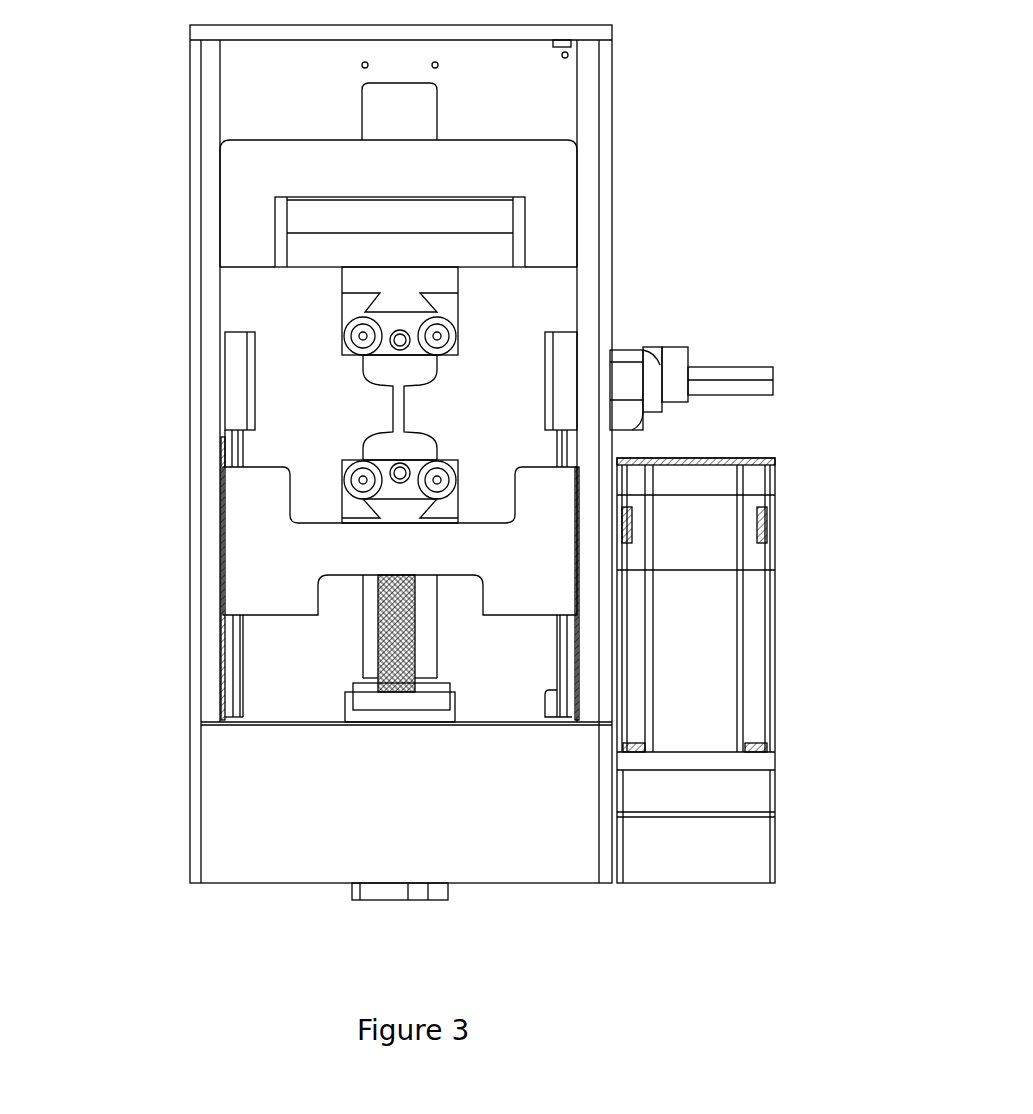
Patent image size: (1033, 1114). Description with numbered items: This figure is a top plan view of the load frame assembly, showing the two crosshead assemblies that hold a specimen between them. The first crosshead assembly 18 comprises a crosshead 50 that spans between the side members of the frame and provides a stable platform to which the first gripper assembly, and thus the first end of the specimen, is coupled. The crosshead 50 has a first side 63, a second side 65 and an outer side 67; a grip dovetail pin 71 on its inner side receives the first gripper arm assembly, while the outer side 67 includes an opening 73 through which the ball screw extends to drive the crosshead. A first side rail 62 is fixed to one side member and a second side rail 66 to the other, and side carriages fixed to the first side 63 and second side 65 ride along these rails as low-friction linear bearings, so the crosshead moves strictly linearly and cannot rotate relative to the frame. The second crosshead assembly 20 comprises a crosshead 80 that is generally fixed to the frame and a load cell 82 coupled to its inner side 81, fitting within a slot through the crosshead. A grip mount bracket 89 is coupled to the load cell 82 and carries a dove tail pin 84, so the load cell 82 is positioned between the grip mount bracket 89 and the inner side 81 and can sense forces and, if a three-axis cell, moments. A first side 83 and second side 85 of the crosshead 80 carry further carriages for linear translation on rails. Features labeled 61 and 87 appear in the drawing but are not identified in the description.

The first crosshead assembly 18 is at (240, 558).
The second crosshead assembly 20 is at (332, 462).
The crosshead 50 is at (476, 494).
The lower grip support 61 is at (312, 518).
The first side rail 62 is at (193, 658).
The first side 63 is at (222, 485).
The second side 65 is at (570, 552).
The second side rail 66 is at (577, 648).
The outer side 67 is at (263, 600).
The grip dovetail pin 71 is at (407, 512).
The opening 73 is at (377, 600).
The crosshead 80 is at (565, 236).
The inner side 81 is at (587, 350).
The load cell 82 is at (389, 260).
The first side 83 is at (200, 157).
The dove tail pin 84 is at (408, 312).
The second side 85 is at (580, 197).
The upper crosshead plate 87 is at (484, 139).
The grip mount bracket 89 is at (453, 293).